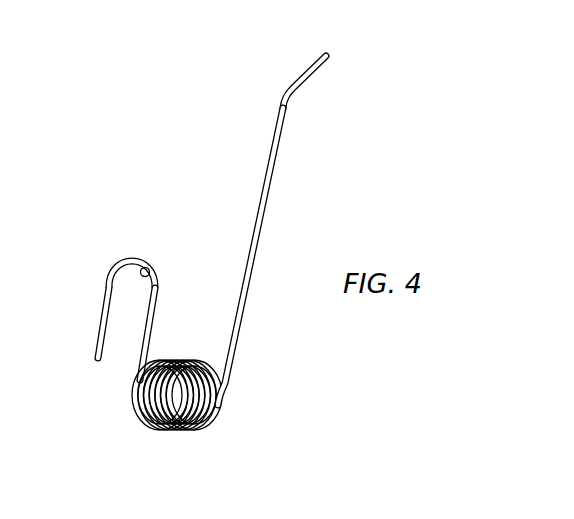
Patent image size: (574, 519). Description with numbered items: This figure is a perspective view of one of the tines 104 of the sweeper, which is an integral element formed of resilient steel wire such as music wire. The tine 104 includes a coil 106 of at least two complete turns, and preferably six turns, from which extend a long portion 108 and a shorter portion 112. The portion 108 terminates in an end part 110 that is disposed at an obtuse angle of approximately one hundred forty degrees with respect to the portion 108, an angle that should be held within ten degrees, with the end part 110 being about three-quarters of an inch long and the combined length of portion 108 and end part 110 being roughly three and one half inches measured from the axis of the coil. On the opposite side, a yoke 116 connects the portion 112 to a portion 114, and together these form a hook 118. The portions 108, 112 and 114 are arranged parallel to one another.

The tine 104 is at (207, 266).
The coil 106 is at (187, 431).
The portion 108 is at (260, 227).
The end part 110 is at (320, 67).
The portion 112 is at (152, 328).
The portion 114 is at (103, 315).
The yoke 116 is at (139, 258).
The hook 118 is at (146, 276).